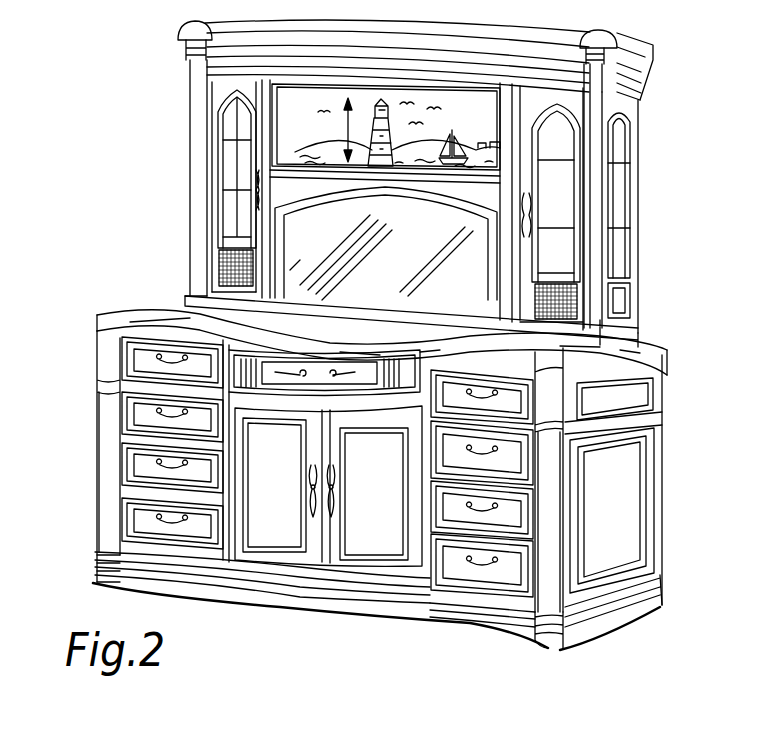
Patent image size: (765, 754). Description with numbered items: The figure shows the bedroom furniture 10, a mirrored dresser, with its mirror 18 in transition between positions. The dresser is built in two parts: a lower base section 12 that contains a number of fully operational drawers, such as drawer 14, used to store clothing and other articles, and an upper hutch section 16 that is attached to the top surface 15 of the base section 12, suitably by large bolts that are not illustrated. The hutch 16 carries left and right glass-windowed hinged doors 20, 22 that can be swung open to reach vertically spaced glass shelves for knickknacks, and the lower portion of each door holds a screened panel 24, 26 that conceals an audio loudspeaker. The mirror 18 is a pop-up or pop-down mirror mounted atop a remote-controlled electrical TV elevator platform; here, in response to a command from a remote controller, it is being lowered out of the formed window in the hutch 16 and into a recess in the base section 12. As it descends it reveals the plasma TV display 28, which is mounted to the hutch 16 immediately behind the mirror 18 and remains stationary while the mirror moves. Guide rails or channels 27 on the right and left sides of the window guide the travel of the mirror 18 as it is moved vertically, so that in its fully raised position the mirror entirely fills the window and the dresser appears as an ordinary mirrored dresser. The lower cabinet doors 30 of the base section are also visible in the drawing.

The bedroom furniture 10 is at (121, 302).
The base section 12 is at (101, 457).
The drawer 14 is at (135, 522).
The top surface 15 is at (652, 348).
The hutch section 16 is at (192, 186).
The mirror 18 is at (348, 244).
The left glass-windowed hinged door 20 is at (207, 97).
The right glass-windowed hinged door 22 is at (580, 104).
The screened panel 24 is at (218, 270).
The screened panel 26 is at (536, 292).
The guide rails 27 is at (282, 109).
The plasma TV display 28 is at (284, 147).
The door 30 is at (290, 497).